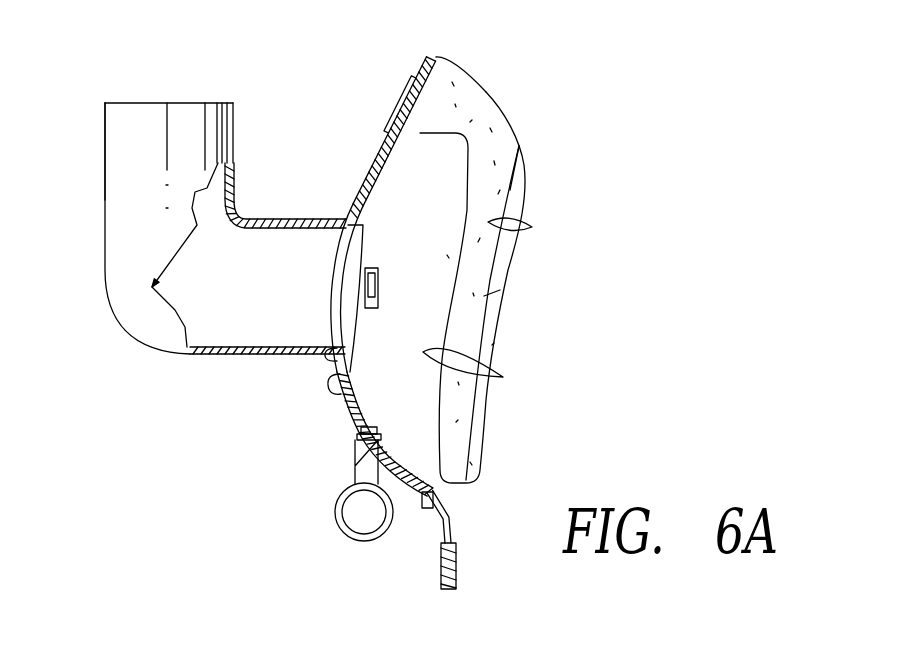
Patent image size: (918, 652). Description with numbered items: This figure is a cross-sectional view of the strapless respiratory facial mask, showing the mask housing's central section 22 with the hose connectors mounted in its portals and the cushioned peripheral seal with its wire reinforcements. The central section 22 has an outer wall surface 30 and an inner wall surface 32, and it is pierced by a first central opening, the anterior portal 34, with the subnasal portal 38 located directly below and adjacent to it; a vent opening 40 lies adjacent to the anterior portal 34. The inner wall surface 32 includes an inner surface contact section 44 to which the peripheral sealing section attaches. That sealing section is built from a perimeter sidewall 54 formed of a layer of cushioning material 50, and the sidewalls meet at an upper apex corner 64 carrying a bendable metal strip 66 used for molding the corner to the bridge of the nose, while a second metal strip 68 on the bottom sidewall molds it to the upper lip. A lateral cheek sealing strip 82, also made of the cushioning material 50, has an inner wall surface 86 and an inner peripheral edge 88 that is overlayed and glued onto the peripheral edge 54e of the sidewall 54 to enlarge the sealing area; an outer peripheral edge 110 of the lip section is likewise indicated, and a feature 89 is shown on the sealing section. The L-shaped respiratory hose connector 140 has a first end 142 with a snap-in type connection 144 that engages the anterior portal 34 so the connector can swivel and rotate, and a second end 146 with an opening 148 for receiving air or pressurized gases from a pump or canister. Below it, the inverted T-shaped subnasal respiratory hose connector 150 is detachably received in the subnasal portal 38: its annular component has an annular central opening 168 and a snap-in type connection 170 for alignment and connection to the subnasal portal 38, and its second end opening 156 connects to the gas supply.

The central section 22 is at (330, 416).
The outer wall surface 30 is at (338, 251).
The inner wall surface 32 is at (350, 362).
The anterior portal 34 is at (343, 282).
The subnasal portal 38 is at (353, 437).
The vent opening 40 is at (374, 278).
The inner surface contact section 44 is at (503, 377).
The cushioning material 50 is at (412, 115).
The perimeter sidewall 54 is at (490, 187).
The peripheral edge 54e is at (515, 133).
The upper apex corner 64 is at (447, 73).
The metal strip 66 is at (414, 82).
The second metal strip 68 is at (422, 497).
The sealing strip 82 is at (535, 197).
The inner wall surface 86 is at (503, 257).
The inner peripheral edge 88 is at (487, 303).
The recess 89 is at (530, 227).
The outer peripheral edge 110 is at (448, 590).
The respiratory hose connector 140 is at (99, 251).
The first end 142 is at (298, 353).
The snap-in type connection 144 is at (344, 212).
The second end 146 is at (123, 152).
The opening 148 is at (186, 96).
The subnasal respiratory hose connector 150 is at (346, 545).
The second end opening 156 is at (355, 515).
The annular central opening 168 is at (363, 420).
The snap-in type connection 170 is at (342, 477).